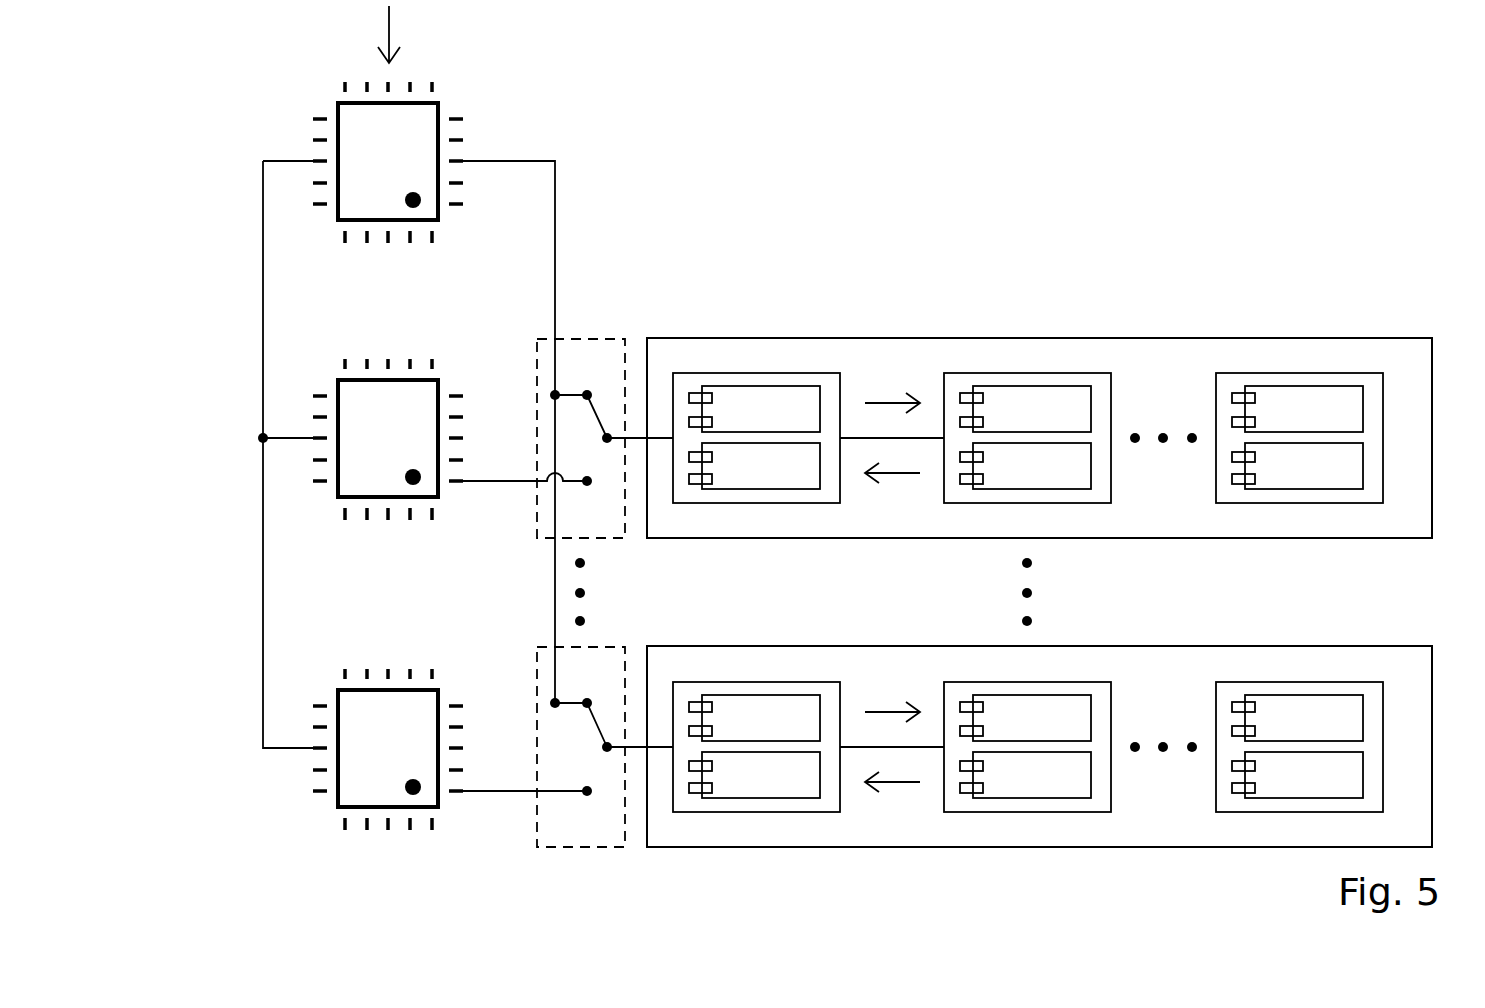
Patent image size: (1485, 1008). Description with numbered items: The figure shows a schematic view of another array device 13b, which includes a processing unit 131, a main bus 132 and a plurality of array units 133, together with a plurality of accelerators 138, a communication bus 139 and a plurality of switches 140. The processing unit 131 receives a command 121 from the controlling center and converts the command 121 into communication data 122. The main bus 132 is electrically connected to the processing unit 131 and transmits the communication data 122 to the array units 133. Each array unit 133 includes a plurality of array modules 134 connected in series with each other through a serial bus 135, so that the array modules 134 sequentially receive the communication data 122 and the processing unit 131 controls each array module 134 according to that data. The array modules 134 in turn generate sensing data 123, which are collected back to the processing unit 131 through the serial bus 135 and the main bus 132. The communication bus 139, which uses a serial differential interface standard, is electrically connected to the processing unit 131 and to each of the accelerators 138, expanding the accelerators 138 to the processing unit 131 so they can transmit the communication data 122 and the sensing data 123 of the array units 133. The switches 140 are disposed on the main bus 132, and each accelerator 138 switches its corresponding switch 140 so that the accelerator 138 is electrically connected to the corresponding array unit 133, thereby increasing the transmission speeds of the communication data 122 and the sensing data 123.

The array device 13b is at (222, 154).
The command 121 is at (389, 23).
The communication data 122 is at (887, 400).
The sensing data 123 is at (887, 476).
The processing unit 131 is at (353, 208).
The main bus 132 is at (557, 201).
The array unit 133 is at (693, 338).
The array module 134 is at (757, 373).
The serial bus 135 is at (855, 438).
The accelerator 138 is at (353, 398).
The communication bus 139 is at (263, 288).
The switch 140 is at (537, 367).